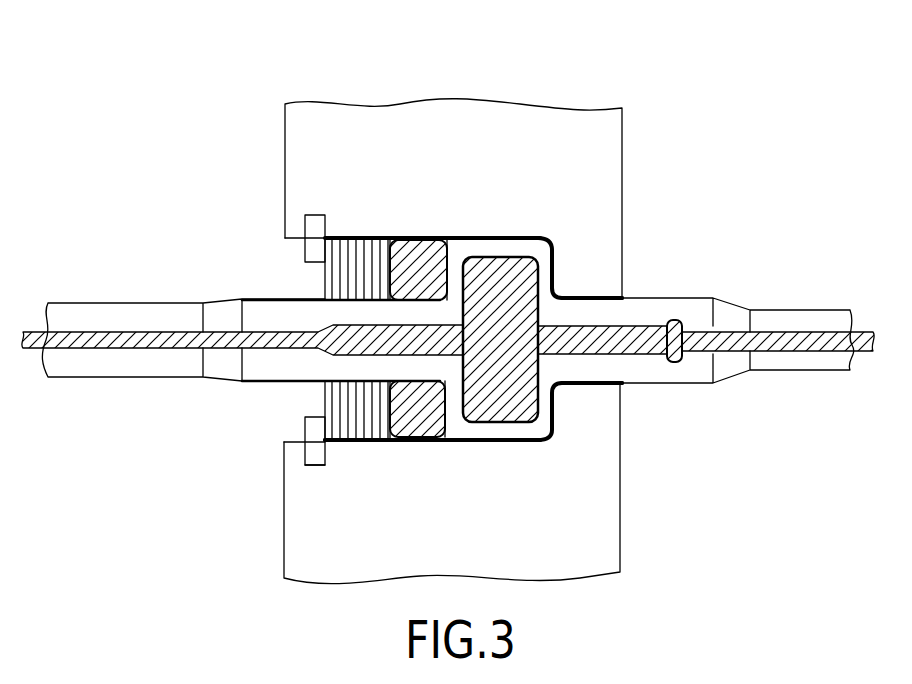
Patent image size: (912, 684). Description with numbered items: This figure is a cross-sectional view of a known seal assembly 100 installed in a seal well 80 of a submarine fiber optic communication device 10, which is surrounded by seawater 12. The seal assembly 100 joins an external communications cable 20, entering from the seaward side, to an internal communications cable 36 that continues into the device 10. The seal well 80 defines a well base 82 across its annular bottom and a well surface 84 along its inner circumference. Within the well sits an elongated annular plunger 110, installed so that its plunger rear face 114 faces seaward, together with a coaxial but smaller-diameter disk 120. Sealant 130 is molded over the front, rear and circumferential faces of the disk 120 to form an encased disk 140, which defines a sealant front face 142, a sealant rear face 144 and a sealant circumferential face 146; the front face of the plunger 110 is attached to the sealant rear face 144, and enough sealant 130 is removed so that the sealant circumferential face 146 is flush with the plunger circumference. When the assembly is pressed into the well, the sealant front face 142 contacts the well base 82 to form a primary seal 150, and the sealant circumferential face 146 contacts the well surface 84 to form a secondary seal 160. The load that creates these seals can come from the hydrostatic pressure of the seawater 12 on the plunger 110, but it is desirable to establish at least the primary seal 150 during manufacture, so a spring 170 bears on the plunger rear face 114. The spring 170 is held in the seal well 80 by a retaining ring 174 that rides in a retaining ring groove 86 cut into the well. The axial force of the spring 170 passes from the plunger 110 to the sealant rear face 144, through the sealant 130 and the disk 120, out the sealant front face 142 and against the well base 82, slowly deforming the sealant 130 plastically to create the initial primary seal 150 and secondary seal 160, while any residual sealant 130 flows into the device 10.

The submarine fiber optic communication device 10 is at (543, 105).
The seawater 12 is at (142, 497).
The external communications cable 20 is at (103, 377).
The internal communications cable 36 is at (808, 374).
The seal well 80 is at (373, 237).
The well base 82 is at (550, 262).
The well surface 84 is at (540, 248).
The retaining ring groove 86 is at (313, 467).
The seal assembly 100 is at (543, 238).
The plunger 110 is at (388, 441).
The plunger rear face 114 is at (390, 273).
The disk 120 is at (482, 262).
The sealant 130 is at (455, 423).
The encased disk 140 is at (507, 258).
The sealant front face 142 is at (547, 280).
The sealant rear face 144 is at (428, 267).
The sealant circumferential face 146 is at (497, 433).
The primary seal 150 is at (553, 412).
The secondary seal 160 is at (513, 442).
The spring 170 is at (353, 442).
The retaining ring 174 is at (315, 440).